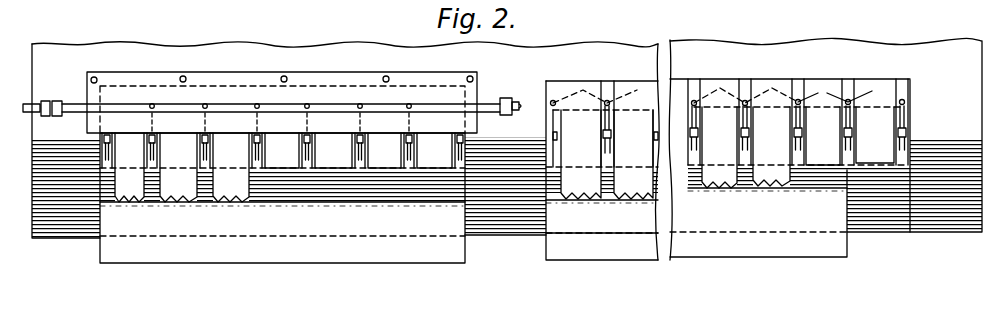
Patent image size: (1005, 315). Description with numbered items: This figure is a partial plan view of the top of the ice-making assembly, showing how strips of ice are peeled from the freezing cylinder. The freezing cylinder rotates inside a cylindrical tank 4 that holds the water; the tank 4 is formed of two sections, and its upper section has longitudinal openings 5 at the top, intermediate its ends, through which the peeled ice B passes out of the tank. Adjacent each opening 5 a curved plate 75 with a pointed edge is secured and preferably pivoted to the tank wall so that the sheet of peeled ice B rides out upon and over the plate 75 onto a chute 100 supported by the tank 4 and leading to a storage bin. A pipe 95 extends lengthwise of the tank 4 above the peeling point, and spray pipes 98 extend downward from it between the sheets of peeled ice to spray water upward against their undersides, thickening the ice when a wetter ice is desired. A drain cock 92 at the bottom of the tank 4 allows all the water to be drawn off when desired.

The cylindrical tank 4 is at (362, 48).
The longitudinal openings 5 is at (432, 90).
The drain cock 92 is at (261, 61).
The pipe 95 is at (486, 102).
The spray pipe 98 is at (607, 101).
The curved plate 75 is at (504, 136).
The chute 100 is at (545, 252).
The ice B is at (170, 196).